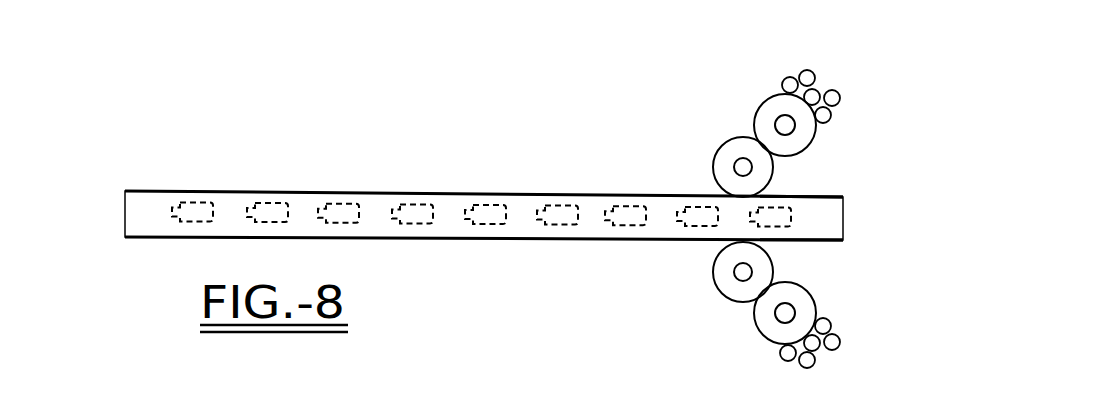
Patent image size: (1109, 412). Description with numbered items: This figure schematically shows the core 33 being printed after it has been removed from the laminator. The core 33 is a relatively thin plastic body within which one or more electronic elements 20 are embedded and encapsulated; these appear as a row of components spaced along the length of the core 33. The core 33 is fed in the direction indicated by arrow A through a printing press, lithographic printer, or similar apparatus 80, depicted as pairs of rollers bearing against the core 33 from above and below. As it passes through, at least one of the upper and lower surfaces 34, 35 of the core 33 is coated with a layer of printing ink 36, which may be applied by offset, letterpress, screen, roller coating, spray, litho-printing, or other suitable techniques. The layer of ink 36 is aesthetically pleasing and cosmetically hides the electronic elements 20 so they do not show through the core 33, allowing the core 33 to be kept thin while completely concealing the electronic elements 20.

The electronic elements 20 is at (385, 193).
The core 33 is at (117, 213).
The upper surface 34 is at (831, 197).
The lower surface 35 is at (833, 242).
The layer of printing ink 36 is at (525, 193).
The printing apparatus 80 is at (738, 114).
The feed direction arrow A is at (866, 222).